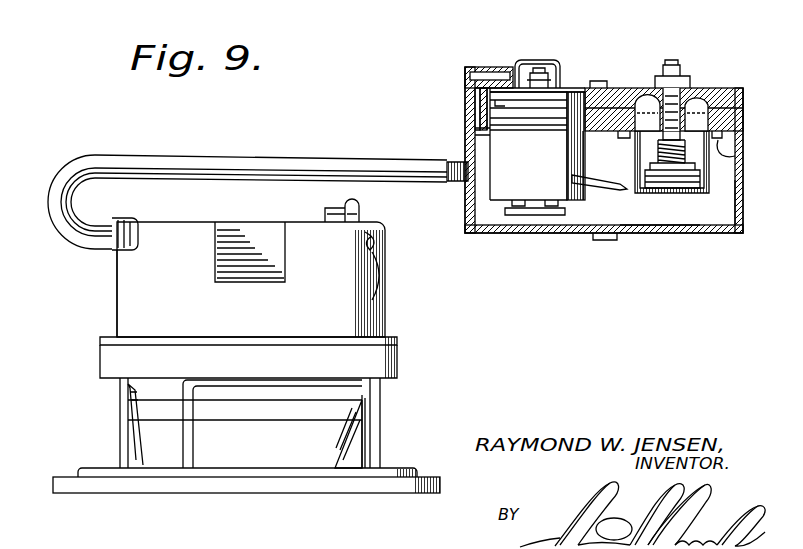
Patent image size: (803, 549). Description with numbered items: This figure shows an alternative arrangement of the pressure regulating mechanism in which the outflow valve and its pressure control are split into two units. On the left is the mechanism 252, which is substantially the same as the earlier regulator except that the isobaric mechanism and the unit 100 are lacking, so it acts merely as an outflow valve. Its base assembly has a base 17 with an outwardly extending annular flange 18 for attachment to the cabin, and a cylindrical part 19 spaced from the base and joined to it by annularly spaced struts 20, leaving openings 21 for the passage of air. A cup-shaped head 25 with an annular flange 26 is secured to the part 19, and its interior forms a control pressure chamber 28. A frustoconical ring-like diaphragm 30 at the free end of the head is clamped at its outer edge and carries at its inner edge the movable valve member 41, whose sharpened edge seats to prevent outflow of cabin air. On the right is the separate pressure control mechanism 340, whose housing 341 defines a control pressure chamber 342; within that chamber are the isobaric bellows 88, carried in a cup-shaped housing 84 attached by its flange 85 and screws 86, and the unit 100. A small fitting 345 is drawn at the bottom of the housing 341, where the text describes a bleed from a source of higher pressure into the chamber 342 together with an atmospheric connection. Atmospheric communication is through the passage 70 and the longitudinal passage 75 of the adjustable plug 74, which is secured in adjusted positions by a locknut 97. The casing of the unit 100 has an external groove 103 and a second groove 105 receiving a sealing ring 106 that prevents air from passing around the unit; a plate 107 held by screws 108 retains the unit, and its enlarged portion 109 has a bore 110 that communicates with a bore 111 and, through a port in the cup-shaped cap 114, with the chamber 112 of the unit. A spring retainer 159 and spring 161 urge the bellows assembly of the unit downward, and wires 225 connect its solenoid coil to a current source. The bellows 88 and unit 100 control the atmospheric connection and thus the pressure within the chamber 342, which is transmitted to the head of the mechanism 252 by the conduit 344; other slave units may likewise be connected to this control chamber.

The base 17 is at (405, 470).
The annular flange 18 is at (405, 493).
The cylindrical part 19 is at (397, 358).
The struts 20 is at (122, 442).
The openings 21 is at (367, 410).
The cup-shaped head 25 is at (385, 292).
The annular flange 26 is at (395, 343).
The control pressure chamber 28 is at (376, 270).
The diaphragm 30 is at (132, 388).
The movable valve member 41 is at (350, 450).
The passage 70 is at (615, 108).
The plug 74 is at (682, 130).
The longitudinal passage 75 is at (672, 62).
The cup-shaped housing 84 is at (658, 194).
The flange 85 is at (720, 134).
The screws 86 is at (726, 150).
The bellows 88 is at (710, 183).
The locknut 97 is at (690, 84).
The unit 100 is at (481, 145).
The external groove 103 is at (482, 108).
The second groove 105 is at (515, 118).
The sealing ring 106 is at (480, 127).
The plate 107 is at (570, 88).
The screws 108 is at (600, 82).
The enlarged portion 109 is at (478, 70).
The bore 110 is at (497, 73).
The bore 111 is at (478, 96).
The chamber 112 is at (552, 72).
The cup-shaped cap 114 is at (541, 60).
The spring retainer 159 is at (557, 209).
The spring 161 is at (520, 212).
The wires 225 is at (624, 188).
The mechanism 252 is at (100, 297).
The pressure control mechanism 340 is at (578, 247).
The housing 341 is at (622, 235).
The control pressure chamber 342 is at (685, 215).
The conduit 344 is at (243, 163).
The drain 345 is at (604, 242).